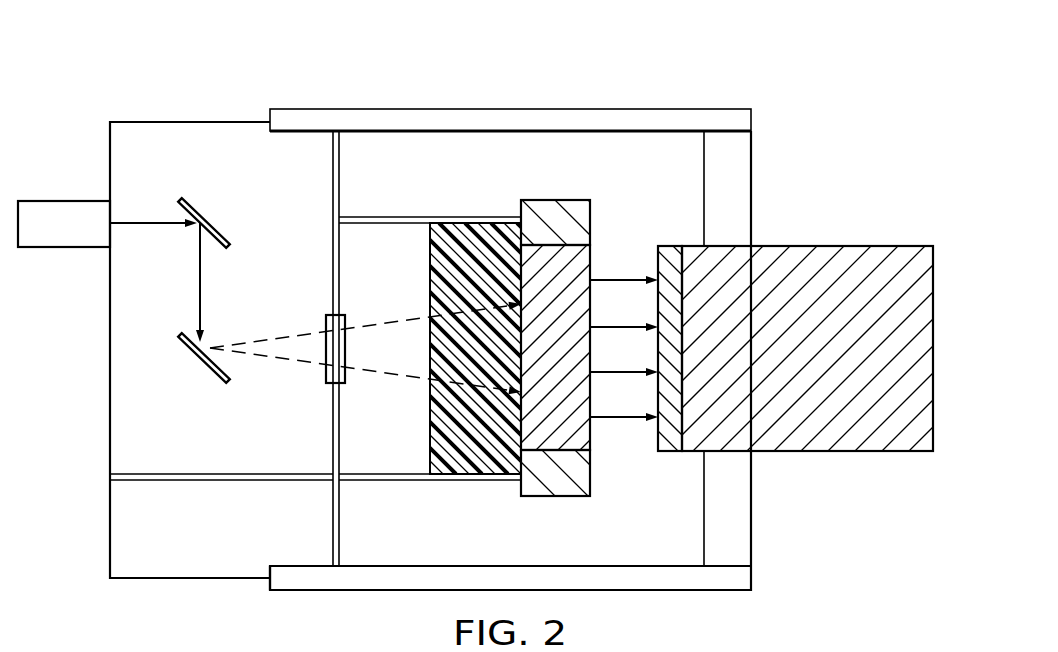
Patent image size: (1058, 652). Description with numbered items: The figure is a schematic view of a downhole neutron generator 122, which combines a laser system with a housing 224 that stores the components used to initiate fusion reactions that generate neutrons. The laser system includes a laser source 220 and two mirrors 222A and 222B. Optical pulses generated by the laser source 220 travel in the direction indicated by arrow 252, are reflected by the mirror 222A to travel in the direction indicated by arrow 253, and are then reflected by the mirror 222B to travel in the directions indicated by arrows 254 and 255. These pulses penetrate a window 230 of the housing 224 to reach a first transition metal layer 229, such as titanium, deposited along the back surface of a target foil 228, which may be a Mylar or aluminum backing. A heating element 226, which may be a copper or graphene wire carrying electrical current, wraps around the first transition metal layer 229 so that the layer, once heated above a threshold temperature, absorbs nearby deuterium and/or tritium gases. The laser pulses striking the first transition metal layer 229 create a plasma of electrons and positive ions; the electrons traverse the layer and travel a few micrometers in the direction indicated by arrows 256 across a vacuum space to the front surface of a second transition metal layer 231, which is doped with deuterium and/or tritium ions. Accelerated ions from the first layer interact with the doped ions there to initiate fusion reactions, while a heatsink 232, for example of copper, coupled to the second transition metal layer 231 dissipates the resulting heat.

The downhole neutron generator 122 is at (143, 62).
The laser source 220 is at (60, 200).
The mirror 222A is at (205, 218).
The mirror 222B is at (200, 363).
The housing 224 is at (511, 116).
The heating element 226 is at (537, 207).
The target foil 228 is at (474, 465).
The first transition metal layer 229 is at (586, 256).
The window 230 is at (308, 388).
The second transition metal layer 231 is at (672, 438).
The heatsink 232 is at (840, 440).
The arrow 252 is at (143, 222).
The arrow 253 is at (200, 282).
The arrow 254 is at (385, 374).
The arrow 255 is at (388, 324).
The arrows 256 is at (634, 442).